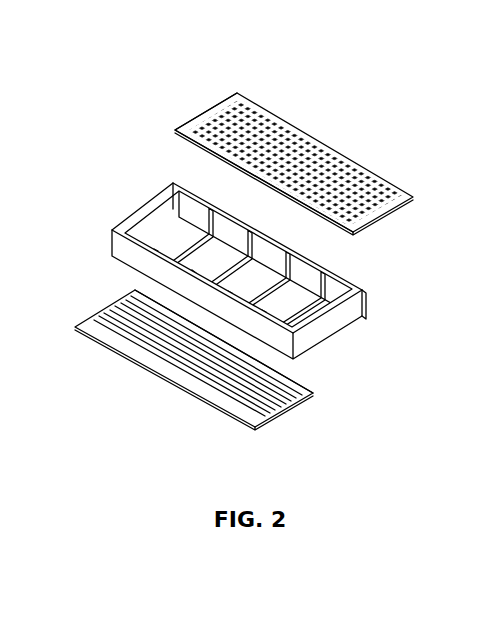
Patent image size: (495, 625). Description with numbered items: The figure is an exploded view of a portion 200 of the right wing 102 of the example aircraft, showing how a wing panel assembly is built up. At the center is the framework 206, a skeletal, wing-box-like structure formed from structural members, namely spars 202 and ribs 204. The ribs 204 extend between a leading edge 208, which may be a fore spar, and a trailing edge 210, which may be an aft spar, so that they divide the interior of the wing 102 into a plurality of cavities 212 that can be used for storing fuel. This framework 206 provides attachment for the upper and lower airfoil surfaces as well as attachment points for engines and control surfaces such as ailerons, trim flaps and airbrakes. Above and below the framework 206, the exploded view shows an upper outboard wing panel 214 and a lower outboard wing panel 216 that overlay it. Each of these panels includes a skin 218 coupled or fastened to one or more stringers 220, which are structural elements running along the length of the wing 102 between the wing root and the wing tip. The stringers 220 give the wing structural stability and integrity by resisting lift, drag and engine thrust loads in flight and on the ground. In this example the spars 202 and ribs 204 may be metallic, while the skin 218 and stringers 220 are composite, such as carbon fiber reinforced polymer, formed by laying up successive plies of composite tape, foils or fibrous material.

The right wing 102 is at (289, 59).
The portion 200 is at (323, 109).
The spars 202 is at (283, 325).
The ribs 204 is at (150, 258).
The framework 206 is at (142, 169).
The leading edge 208 is at (108, 279).
The trailing edge 210 is at (373, 300).
The cavities 212 is at (208, 242).
The upper outboard wing panel 214 is at (354, 157).
The lower outboard wing panel 216 is at (292, 414).
The skin 218 is at (184, 130).
The stringers 220 is at (237, 95).